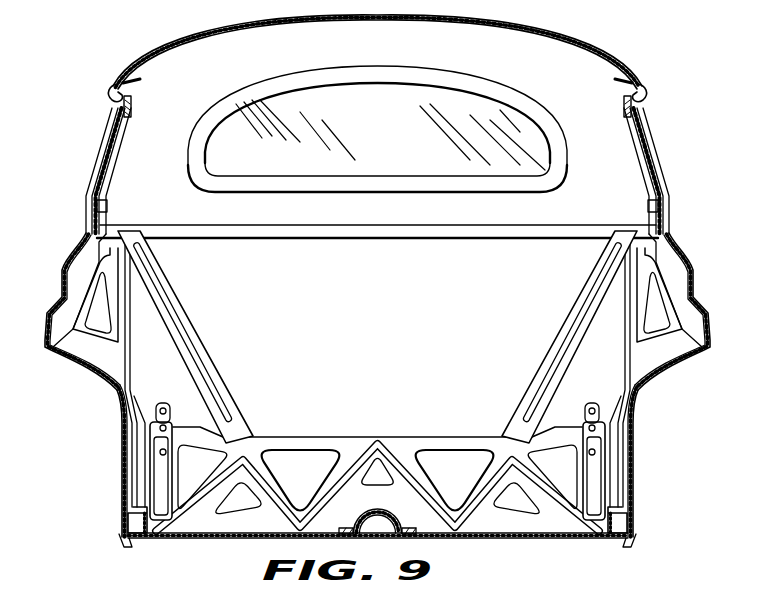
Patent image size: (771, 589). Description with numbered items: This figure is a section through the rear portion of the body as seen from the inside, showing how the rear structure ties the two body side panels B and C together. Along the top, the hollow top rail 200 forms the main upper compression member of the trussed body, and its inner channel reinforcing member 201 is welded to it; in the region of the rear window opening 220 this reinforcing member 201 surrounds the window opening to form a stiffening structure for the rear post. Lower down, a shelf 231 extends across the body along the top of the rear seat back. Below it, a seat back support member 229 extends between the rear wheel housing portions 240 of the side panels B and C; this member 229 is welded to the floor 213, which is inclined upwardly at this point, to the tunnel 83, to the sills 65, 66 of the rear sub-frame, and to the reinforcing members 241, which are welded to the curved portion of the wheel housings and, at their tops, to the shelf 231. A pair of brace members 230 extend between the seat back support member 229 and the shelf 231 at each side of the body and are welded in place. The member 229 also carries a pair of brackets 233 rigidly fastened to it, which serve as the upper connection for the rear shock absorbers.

The top rail 200 is at (110, 93).
The inner channel reinforcing member 201 is at (141, 87).
The rear window opening 220 is at (105, 154).
The shelf 231 is at (436, 240).
The brace member 230 is at (205, 368).
The reinforcing member 241 is at (135, 372).
The bracket 233 is at (599, 406).
The seat back support member 229 is at (474, 414).
The rear wheel housing portion 240 is at (122, 455).
The rear sub-frame side rail 65 is at (125, 527).
The rear sub-frame side rail 66 is at (632, 522).
The tunnel 83 is at (366, 506).
The floor member 213 is at (255, 541).
The body side panel B is at (62, 265).
The body side panel C is at (688, 263).